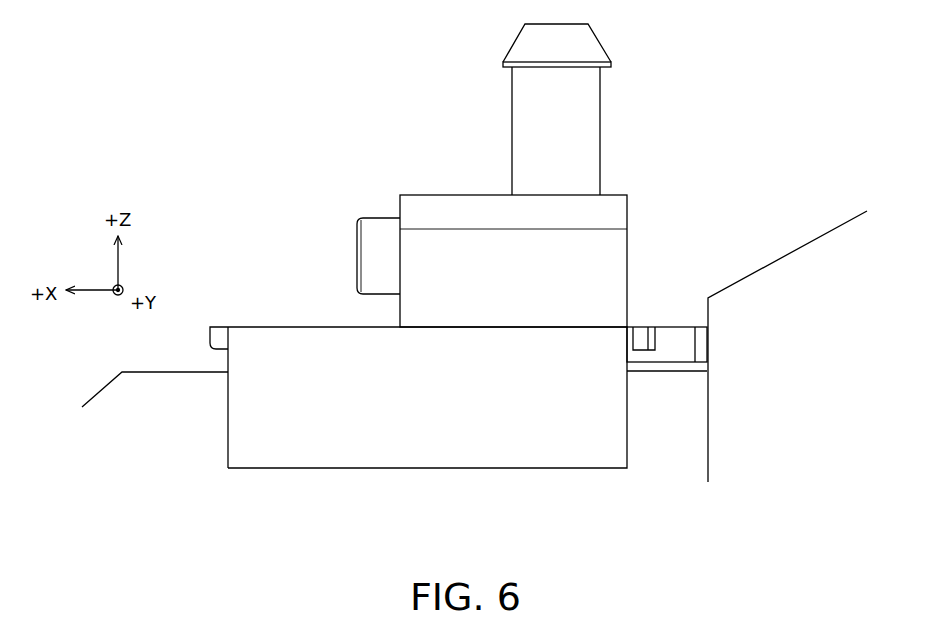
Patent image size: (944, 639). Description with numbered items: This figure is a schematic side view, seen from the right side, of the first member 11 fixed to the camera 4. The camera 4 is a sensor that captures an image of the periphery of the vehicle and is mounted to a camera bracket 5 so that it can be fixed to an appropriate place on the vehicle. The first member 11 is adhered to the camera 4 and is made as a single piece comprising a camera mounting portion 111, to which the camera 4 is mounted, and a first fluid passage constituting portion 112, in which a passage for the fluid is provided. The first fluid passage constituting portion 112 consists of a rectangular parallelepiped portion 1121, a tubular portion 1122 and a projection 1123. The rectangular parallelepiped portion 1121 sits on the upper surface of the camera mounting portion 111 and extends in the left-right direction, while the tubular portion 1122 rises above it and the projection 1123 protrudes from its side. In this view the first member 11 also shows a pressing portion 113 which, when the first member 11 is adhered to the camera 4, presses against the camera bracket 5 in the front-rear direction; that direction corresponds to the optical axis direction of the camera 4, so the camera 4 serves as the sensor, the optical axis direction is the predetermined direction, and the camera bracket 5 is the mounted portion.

The first member 11 is at (309, 112).
The camera mounting portion 111 is at (265, 436).
The first fluid passage constituting portion 112 is at (627, 176).
The rectangular parallelepiped portion 1121 is at (470, 215).
The tubular portion 1122 is at (585, 113).
The projection 1123 is at (360, 218).
The pressing portion 113 is at (675, 337).
The camera 4 is at (192, 390).
The camera bracket 5 is at (800, 265).